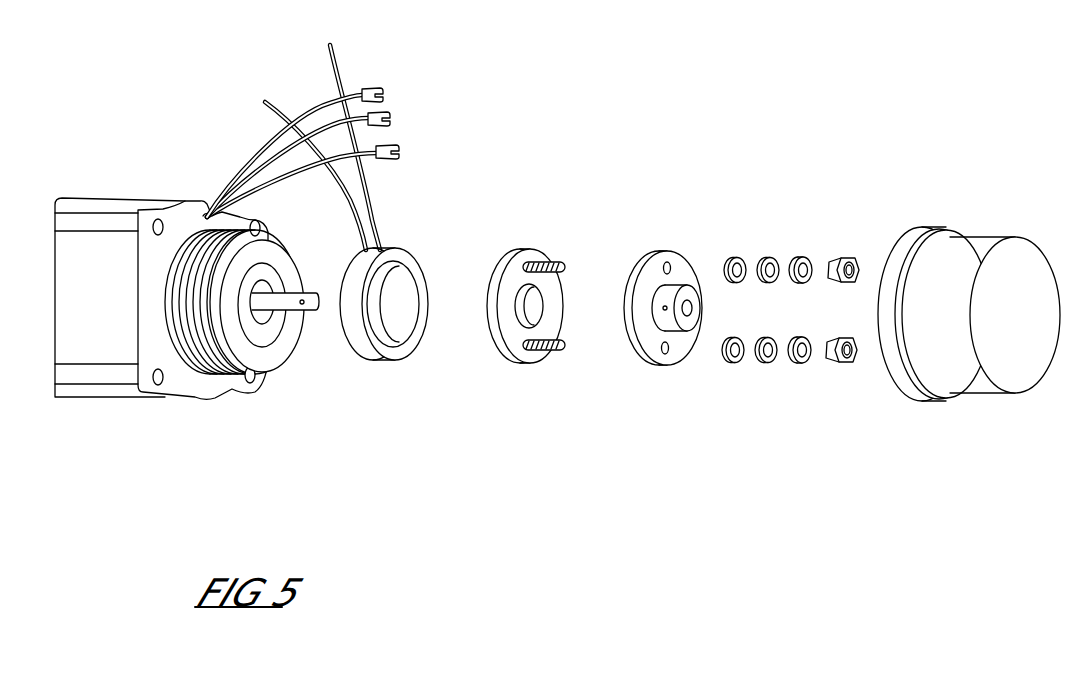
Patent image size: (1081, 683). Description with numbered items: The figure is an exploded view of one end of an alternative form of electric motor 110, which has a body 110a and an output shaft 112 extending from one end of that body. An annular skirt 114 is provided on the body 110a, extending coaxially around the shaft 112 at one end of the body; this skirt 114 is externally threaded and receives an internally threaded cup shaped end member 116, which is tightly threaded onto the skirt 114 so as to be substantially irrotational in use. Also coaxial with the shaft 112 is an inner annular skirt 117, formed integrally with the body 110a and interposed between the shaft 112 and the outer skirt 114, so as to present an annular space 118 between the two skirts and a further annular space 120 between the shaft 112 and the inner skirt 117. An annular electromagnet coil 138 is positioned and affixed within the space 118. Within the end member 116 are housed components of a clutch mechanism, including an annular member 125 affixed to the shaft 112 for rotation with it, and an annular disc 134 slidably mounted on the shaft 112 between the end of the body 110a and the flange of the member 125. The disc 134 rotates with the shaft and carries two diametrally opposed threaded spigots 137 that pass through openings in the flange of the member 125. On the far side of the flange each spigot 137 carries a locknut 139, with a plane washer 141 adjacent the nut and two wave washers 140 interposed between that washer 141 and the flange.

The motor 110 is at (227, 247).
The body 110a is at (98, 394).
The output shaft 112 is at (281, 303).
The annular skirt 114 is at (268, 362).
The cup shaped end member 116 is at (973, 247).
The inner annular skirt 117 is at (274, 328).
The annular space 118 is at (232, 388).
The annular space 120 is at (265, 290).
The annular member 125 is at (682, 225).
The annular disc 134 is at (531, 258).
The spigots 137 is at (550, 262).
The annular electromagnet coil 138 is at (392, 258).
The locknuts 139 is at (850, 258).
The wave washers 140 is at (770, 257).
The plane washer 141 is at (803, 257).